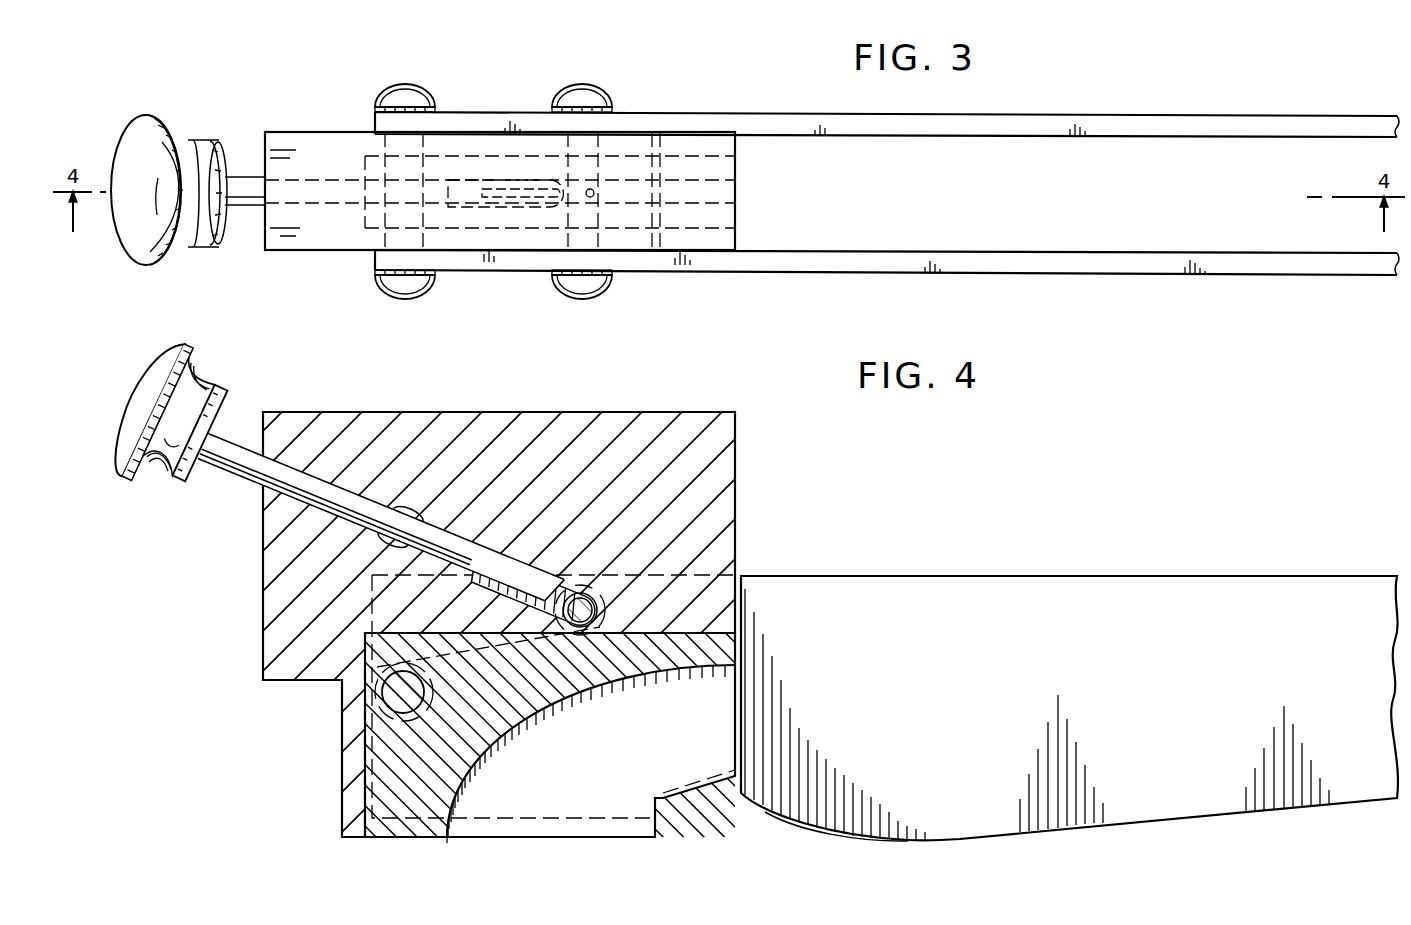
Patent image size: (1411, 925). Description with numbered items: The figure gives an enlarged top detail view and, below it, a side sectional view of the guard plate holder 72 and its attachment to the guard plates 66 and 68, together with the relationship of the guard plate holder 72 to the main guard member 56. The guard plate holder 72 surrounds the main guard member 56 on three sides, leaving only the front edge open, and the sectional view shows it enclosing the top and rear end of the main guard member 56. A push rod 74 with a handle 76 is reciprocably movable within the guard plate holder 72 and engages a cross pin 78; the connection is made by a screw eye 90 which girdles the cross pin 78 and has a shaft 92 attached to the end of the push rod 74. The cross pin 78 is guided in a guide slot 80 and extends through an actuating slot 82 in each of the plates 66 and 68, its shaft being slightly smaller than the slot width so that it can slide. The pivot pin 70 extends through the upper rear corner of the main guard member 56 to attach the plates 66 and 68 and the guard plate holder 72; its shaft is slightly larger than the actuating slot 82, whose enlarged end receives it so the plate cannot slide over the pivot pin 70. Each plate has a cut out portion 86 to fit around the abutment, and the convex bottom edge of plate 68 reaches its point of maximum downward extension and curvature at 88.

In FIG. 3, the main guard member 56 is at (727, 194).
In FIG. 4, the main guard member 56 is at (579, 775).
In FIG. 3, the plate 66 is at (1151, 252).
In FIG. 3, the plate 68 is at (1157, 116).
In FIG. 4, the plate 68 is at (1180, 592).
In FIG. 3, the pivot pin 70 is at (405, 86).
In FIG. 4, the pivot pin 70 is at (385, 697).
In FIG. 3, the guard plate holder 72 is at (292, 132).
In FIG. 4, the guard plate holder 72 is at (737, 450).
In FIG. 3, the push rod 74 is at (244, 178).
In FIG. 4, the push rod 74 is at (240, 458).
In FIG. 3, the handle 76 is at (146, 118).
In FIG. 4, the handle 76 is at (186, 346).
In FIG. 3, the cross pin 78 is at (582, 86).
In FIG. 4, the cross pin 78 is at (597, 603).
In FIG. 4, the guide slot 80 is at (412, 510).
In FIG. 4, the actuating slot 82 is at (440, 657).
In FIG. 4, the cut out portion 86 is at (683, 790).
In FIG. 4, the point of maximum downward extension 88 is at (850, 838).
In FIG. 3, the screw eye 90 is at (593, 190).
In FIG. 4, the screw eye 90 is at (583, 596).
In FIG. 3, the shaft 92 is at (490, 190).
In FIG. 4, the shaft 92 is at (500, 578).